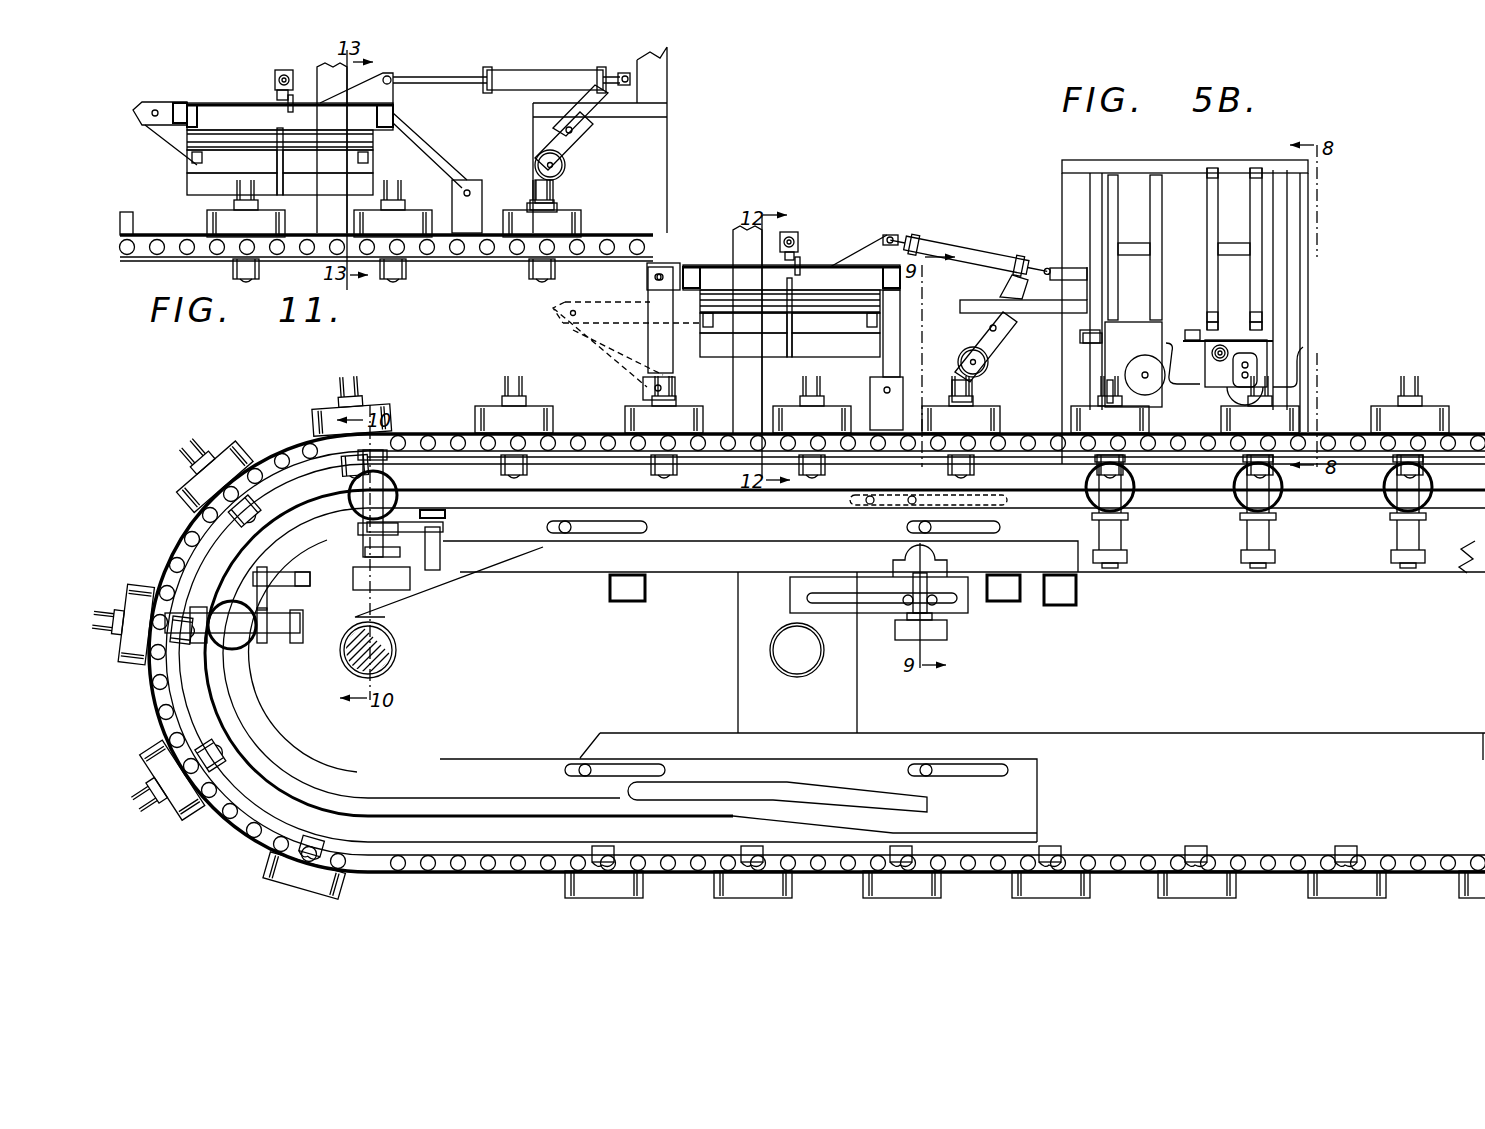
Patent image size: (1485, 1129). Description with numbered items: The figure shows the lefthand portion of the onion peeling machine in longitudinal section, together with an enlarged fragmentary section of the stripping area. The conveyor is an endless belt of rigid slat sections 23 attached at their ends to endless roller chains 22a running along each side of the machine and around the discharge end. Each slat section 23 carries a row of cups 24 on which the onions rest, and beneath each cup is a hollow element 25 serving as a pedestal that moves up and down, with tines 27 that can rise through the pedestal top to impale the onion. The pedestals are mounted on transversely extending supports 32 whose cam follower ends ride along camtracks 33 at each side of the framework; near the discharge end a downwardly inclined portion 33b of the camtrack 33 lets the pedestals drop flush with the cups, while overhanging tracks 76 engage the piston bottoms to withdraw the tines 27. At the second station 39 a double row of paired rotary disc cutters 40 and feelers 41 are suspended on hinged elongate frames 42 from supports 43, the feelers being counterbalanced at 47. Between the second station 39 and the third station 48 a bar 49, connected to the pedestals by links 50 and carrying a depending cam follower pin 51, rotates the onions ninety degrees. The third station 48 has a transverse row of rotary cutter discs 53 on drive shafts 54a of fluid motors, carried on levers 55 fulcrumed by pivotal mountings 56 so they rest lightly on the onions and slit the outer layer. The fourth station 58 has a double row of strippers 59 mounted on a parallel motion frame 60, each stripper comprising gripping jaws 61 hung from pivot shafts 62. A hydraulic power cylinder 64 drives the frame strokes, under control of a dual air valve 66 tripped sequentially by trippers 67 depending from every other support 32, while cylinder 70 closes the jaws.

In FIG. 5B, the endless roller chains 22a is at (173, 567).
In FIG. 11, the slat sections 23 is at (492, 254).
In FIG. 5B, the slat sections 23 is at (297, 445).
In FIG. 11, the cups 24 is at (560, 225).
In FIG. 5B, the cups 24 is at (477, 417).
In FIG. 5B, the hollow element 25 is at (355, 450).
In FIG. 11, the tines 27 is at (400, 192).
In FIG. 5B, the tines 27 is at (980, 397).
In FIG. 5B, the transversely extending supports 32 is at (363, 513).
In FIG. 5B, the camtracks 33 is at (1000, 477).
In FIG. 5B, the downwardly inclined portion 33b is at (420, 480).
In FIG. 5B, the second station 39 is at (1327, 215).
In FIG. 5B, the rotary disc cutters 40 is at (1145, 365).
In FIG. 5B, the feelers 41 is at (1187, 387).
In FIG. 5B, the elongate frames 42 is at (1260, 227).
In FIG. 5B, the supports 43 is at (1177, 170).
In FIG. 5B, the counterbalance 47 is at (1087, 340).
In FIG. 5B, the third station 48 is at (992, 278).
In FIG. 5B, the bar 49 is at (420, 517).
In FIG. 5B, the links 50 is at (440, 522).
In FIG. 5B, the cam follower pin 51 is at (443, 547).
In FIG. 11, the rotary cutter discs 53 is at (540, 165).
In FIG. 5B, the rotary cutter discs 53 is at (965, 372).
In FIG. 11, the drive shafts 54a is at (556, 168).
In FIG. 5B, the drive shafts 54a is at (985, 366).
In FIG. 11, the levers 55 is at (592, 102).
In FIG. 5B, the levers 55 is at (1000, 285).
In FIG. 11, the pivotal mountings 56 is at (580, 143).
In FIG. 5B, the pivotal mountings 56 is at (1012, 333).
In FIG. 11, the fourth station 58 is at (253, 88).
In FIG. 5B, the fourth station 58 is at (850, 233).
In FIG. 11, the strippers 59 is at (225, 138).
In FIG. 5B, the strippers 59 is at (726, 300).
In FIG. 11, the parallel motion frame 60 is at (175, 135).
In FIG. 5B, the parallel motion frame 60 is at (657, 352).
In FIG. 11, the gripping jaws 61 is at (210, 195).
In FIG. 5B, the gripping jaws 61 is at (822, 348).
In FIG. 11, the pivot shafts 62 is at (307, 82).
In FIG. 5B, the pivot shafts 62 is at (734, 275).
In FIG. 11, the hydraulic power cylinder 64 is at (557, 53).
In FIG. 5B, the hydraulic power cylinder 64 is at (948, 248).
In FIG. 5B, the dual air valve 66 is at (892, 592).
In FIG. 5B, the trippers 67 is at (1107, 535).
In FIG. 11, the hydraulic power cylinder 70 is at (282, 70).
In FIG. 5B, the hydraulic power cylinder 70 is at (795, 232).
In FIG. 5B, the overhanging tracks 76 is at (348, 548).